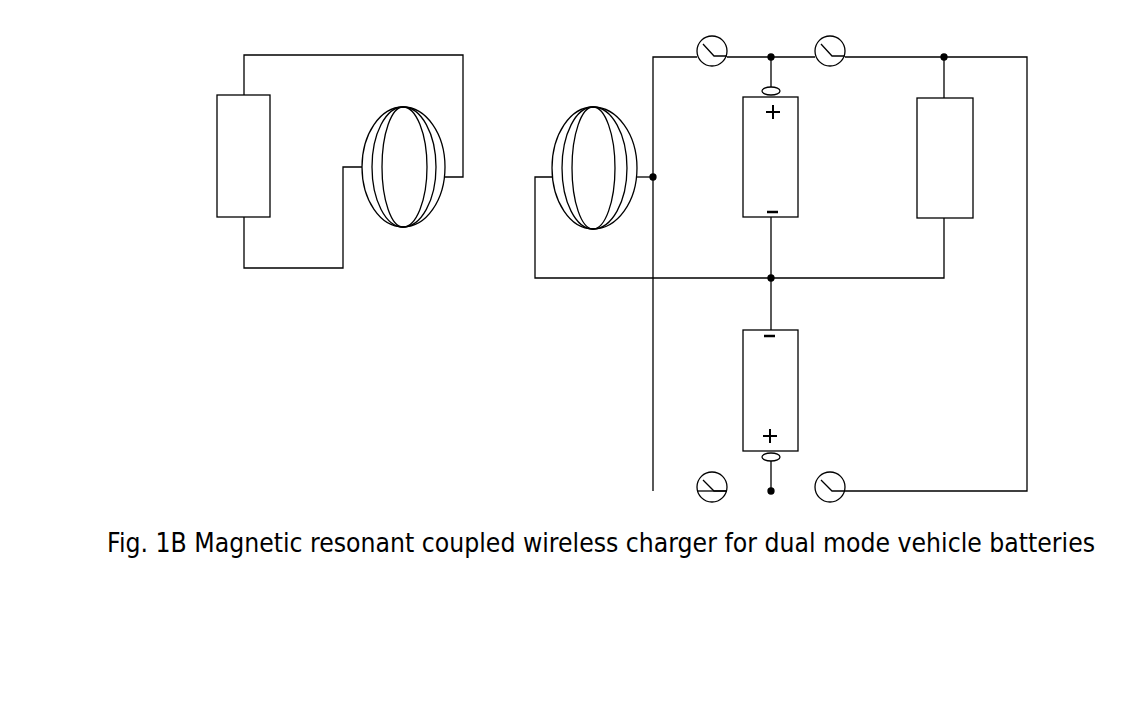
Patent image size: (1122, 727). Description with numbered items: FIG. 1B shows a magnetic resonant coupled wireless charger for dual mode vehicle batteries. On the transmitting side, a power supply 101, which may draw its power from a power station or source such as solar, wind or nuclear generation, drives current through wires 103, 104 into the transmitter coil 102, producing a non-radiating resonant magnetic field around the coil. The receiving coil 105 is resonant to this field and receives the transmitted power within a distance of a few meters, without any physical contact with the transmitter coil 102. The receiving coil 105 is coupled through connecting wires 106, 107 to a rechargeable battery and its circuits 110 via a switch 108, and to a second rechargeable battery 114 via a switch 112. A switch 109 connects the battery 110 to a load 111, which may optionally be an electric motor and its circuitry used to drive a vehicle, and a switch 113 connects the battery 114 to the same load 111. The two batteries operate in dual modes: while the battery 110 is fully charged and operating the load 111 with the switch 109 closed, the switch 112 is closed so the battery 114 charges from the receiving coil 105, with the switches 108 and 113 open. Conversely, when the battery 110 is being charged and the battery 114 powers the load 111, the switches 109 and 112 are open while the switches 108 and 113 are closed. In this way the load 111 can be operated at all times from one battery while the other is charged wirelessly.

The power supply 101 is at (226, 129).
The transmitter coil 102 is at (373, 123).
The wire 103 is at (356, 55).
The wire 104 is at (334, 268).
The receiving coil 105 is at (592, 108).
The connecting wire 106 is at (536, 254).
The connecting wire 107 is at (665, 57).
The switch 108 is at (705, 41).
The switch 109 is at (824, 41).
The rechargeable battery 110 is at (749, 194).
The load 111 is at (925, 169).
The switch 112 is at (710, 476).
The switch 113 is at (842, 475).
The rechargeable battery 114 is at (753, 393).